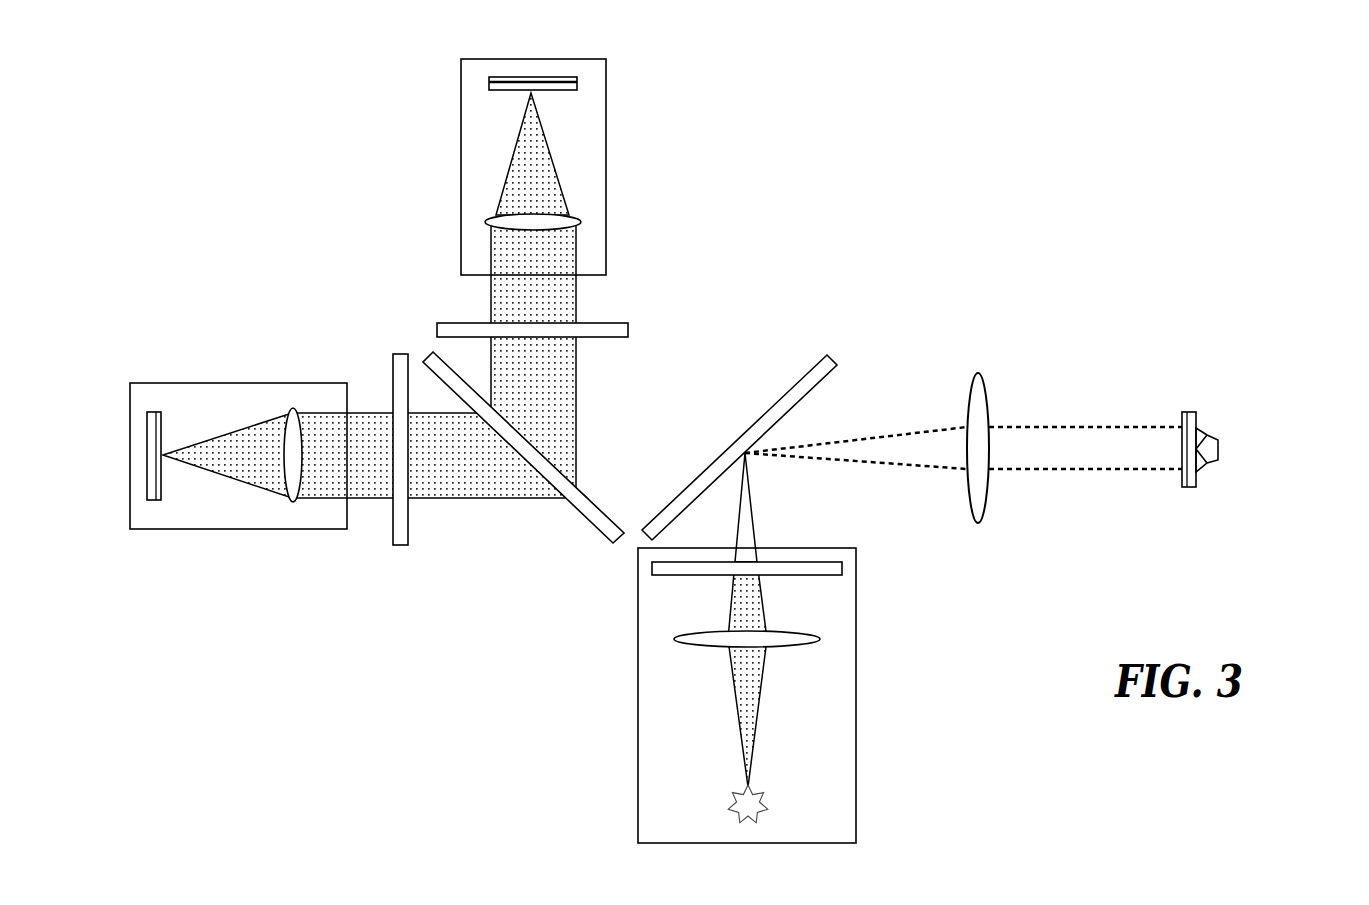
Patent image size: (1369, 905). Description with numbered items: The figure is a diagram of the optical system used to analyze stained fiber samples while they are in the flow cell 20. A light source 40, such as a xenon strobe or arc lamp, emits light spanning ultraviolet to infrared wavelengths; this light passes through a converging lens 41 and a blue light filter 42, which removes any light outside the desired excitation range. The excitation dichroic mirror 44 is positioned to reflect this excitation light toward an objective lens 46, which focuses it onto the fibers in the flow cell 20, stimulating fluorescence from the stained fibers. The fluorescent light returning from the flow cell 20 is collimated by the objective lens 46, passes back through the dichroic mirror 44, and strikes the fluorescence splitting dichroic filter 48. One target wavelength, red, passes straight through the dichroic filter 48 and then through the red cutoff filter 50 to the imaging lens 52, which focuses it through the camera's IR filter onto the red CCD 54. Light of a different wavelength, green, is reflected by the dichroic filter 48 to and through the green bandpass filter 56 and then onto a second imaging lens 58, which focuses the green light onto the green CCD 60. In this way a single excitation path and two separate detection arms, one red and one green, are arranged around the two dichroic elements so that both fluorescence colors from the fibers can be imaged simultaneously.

The flow cell 20 is at (1218, 445).
The light source 40 is at (768, 795).
The converging lens 41 is at (673, 642).
The blue light filter 42 is at (842, 568).
The dichroic mirror 44 is at (837, 360).
The objective lens 46 is at (987, 412).
The fluorescence splitting dichroic filter 48 is at (584, 494).
The cutoff filter 50 is at (437, 585).
The imaging lens 52 is at (292, 502).
The CCD 54 is at (158, 412).
The bandpass filter 56 is at (447, 320).
The imaging lens 58 is at (581, 220).
The green CCD 60 is at (577, 80).